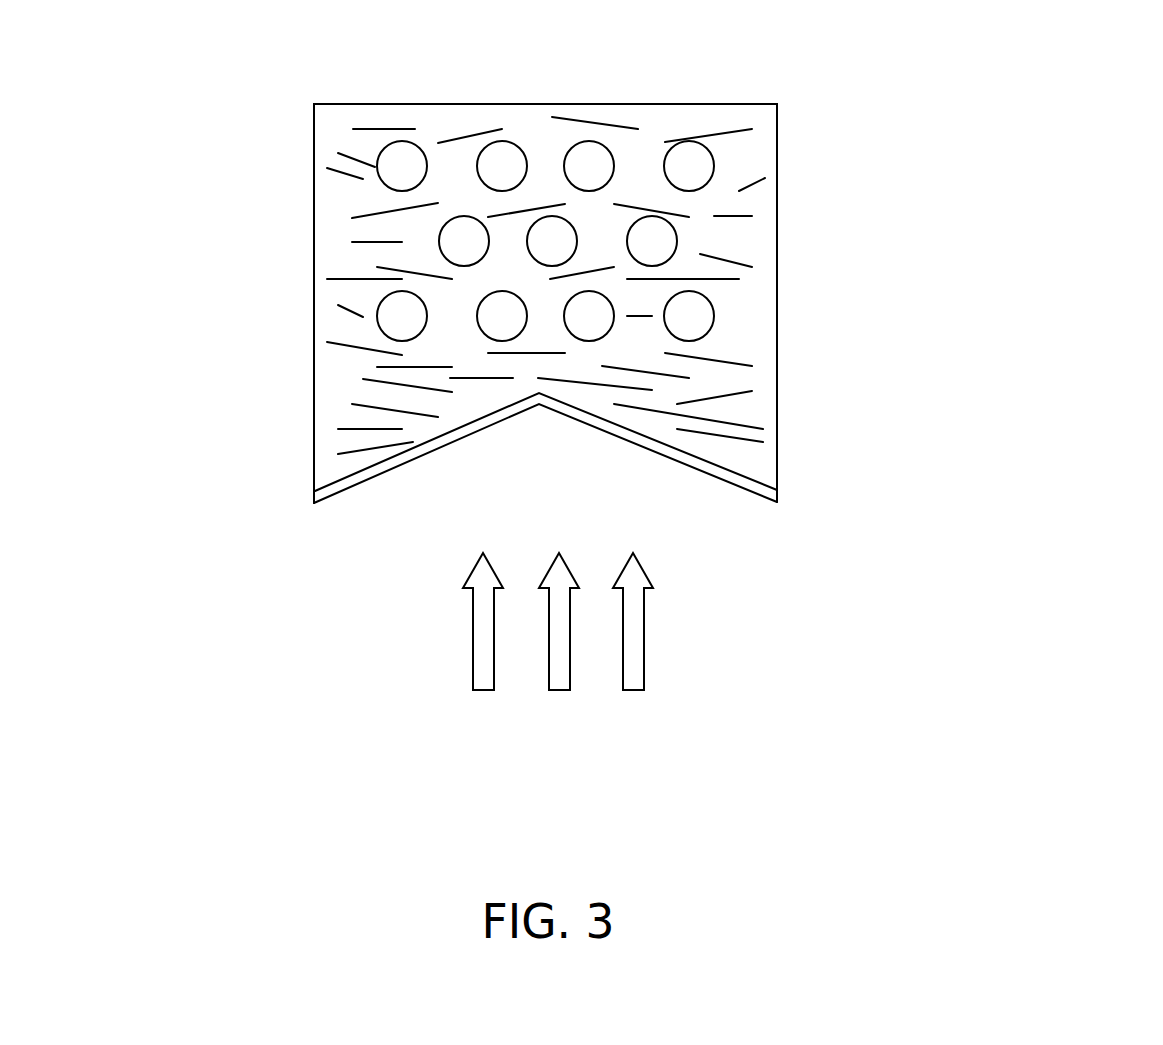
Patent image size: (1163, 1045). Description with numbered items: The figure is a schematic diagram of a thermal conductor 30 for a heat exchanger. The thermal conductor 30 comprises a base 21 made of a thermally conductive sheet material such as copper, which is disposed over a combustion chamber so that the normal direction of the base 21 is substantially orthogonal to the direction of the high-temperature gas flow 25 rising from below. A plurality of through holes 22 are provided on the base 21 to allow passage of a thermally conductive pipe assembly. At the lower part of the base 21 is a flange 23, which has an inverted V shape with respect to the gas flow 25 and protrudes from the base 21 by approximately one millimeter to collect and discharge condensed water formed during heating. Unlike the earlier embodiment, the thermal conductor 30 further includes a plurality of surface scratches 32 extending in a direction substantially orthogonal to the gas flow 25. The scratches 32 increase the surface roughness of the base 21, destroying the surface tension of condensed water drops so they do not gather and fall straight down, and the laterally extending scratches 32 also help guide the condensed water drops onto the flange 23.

The thermal conductor 30 is at (1022, 146).
The base 21 is at (313, 292).
The through holes 22 is at (378, 160).
The flange 23 is at (365, 478).
The gas flow 25 is at (638, 638).
The surface scratches 32 is at (362, 428).